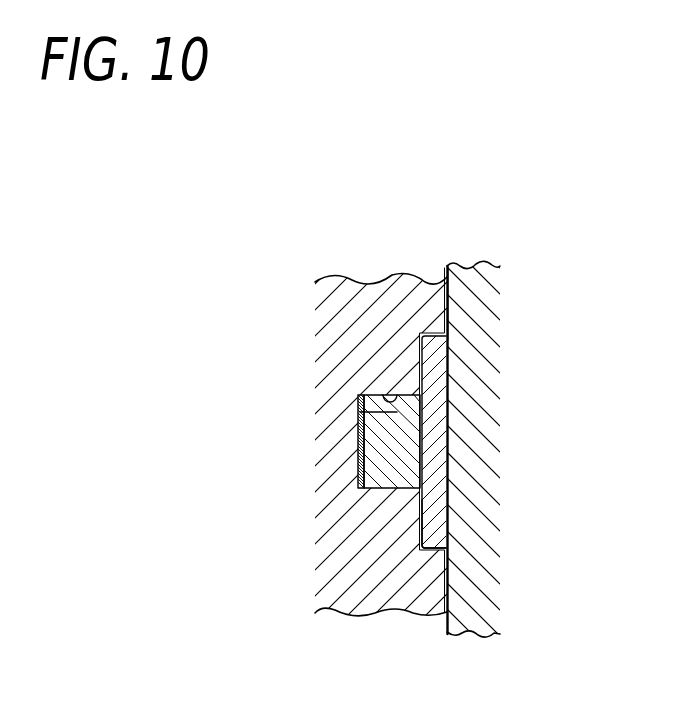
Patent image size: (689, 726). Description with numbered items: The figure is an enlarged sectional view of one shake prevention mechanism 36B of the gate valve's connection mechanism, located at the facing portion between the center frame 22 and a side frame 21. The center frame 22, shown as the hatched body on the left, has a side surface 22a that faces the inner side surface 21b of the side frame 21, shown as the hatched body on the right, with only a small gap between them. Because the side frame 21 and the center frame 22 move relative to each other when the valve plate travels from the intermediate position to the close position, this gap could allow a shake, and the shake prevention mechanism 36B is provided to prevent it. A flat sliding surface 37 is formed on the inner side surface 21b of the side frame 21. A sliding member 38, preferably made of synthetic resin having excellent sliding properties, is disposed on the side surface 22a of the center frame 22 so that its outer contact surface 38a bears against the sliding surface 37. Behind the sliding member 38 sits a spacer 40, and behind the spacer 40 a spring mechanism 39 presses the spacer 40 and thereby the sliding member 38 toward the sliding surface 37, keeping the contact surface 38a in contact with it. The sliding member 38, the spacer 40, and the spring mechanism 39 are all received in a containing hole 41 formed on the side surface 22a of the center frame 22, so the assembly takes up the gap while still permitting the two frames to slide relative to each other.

The side frame 21 is at (470, 267).
The inner side surface 21b is at (450, 584).
The center frame 22 is at (360, 307).
The side surface 22a is at (447, 565).
The shake prevention mechanism 36B is at (473, 355).
The sliding surface 37 is at (422, 356).
The sliding member 38 is at (440, 421).
The contact surface 38a is at (448, 493).
The spring mechanism 39 is at (357, 477).
The spacer 40 is at (390, 440).
The containing hole 41 is at (360, 412).